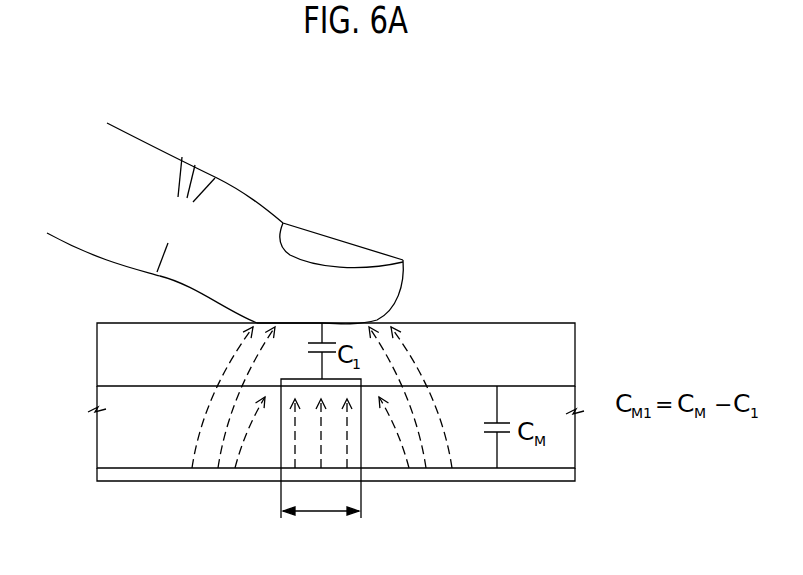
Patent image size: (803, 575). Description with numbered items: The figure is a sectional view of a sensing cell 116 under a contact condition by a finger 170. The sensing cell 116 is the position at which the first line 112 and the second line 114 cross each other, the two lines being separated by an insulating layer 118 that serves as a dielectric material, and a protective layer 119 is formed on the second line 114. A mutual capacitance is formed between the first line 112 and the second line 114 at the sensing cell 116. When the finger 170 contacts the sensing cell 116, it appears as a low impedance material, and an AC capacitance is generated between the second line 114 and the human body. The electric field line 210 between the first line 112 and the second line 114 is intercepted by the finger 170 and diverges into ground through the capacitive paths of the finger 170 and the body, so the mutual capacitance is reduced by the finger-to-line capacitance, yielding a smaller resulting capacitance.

The finger 170 is at (162, 153).
The second line 114 is at (353, 383).
The protective layer 119 is at (105, 352).
The insulating layer 118 is at (105, 446).
The first line 112 is at (577, 478).
The sensing cell 116 is at (321, 465).
The electric field line 210 is at (443, 435).